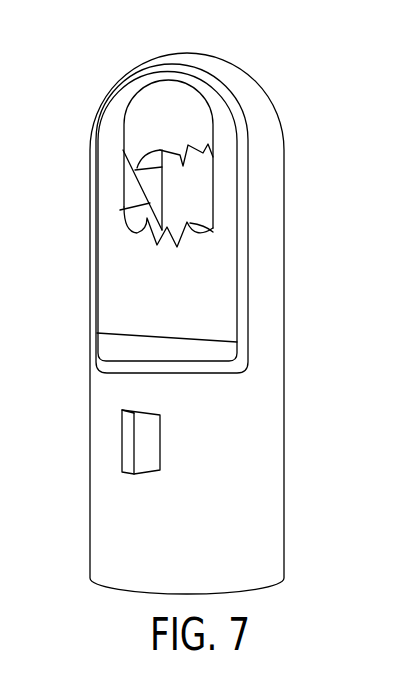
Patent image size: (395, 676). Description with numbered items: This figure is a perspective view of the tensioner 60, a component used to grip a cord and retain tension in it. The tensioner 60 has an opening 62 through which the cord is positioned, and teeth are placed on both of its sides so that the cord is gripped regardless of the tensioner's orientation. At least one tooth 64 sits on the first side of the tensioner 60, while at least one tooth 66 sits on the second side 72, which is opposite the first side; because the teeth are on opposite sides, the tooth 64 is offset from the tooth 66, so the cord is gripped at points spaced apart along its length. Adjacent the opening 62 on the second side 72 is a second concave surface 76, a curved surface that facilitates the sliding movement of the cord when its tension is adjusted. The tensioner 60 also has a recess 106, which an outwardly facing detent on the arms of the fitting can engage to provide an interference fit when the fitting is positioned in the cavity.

The tensioner 60 is at (280, 168).
The opening 62 is at (203, 187).
The tooth 64 is at (181, 157).
The tooth 66 is at (183, 222).
The second side 72 is at (200, 307).
The second concave surface 76 is at (165, 118).
The recess 106 is at (138, 452).